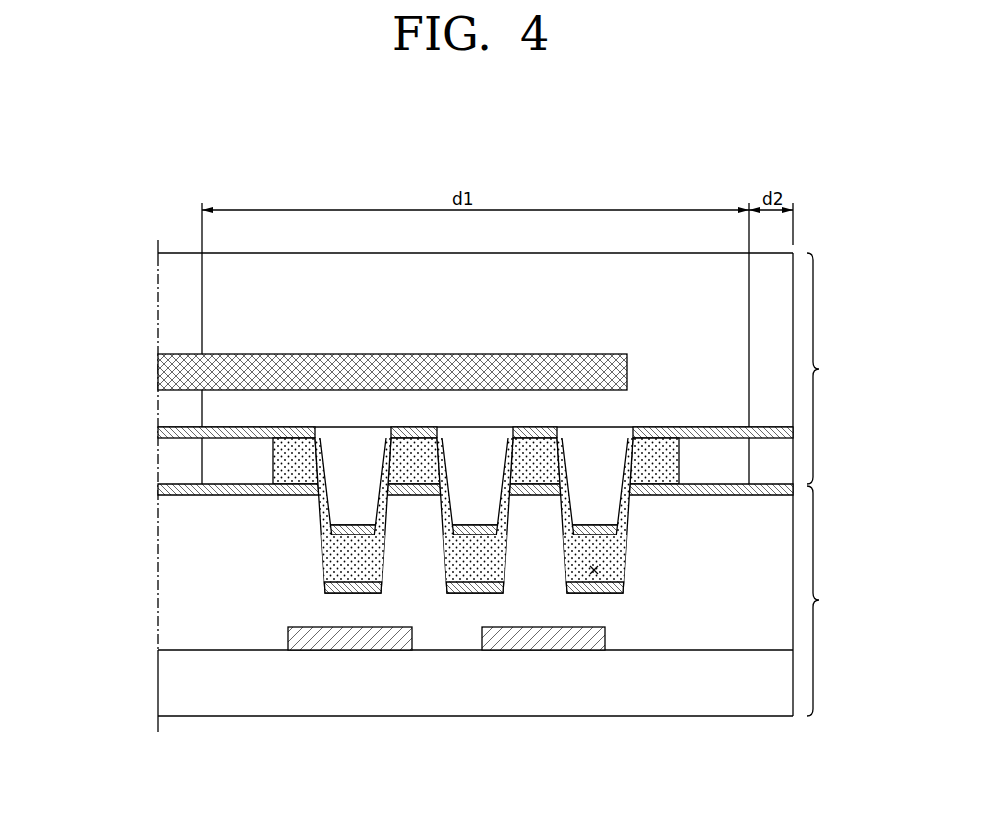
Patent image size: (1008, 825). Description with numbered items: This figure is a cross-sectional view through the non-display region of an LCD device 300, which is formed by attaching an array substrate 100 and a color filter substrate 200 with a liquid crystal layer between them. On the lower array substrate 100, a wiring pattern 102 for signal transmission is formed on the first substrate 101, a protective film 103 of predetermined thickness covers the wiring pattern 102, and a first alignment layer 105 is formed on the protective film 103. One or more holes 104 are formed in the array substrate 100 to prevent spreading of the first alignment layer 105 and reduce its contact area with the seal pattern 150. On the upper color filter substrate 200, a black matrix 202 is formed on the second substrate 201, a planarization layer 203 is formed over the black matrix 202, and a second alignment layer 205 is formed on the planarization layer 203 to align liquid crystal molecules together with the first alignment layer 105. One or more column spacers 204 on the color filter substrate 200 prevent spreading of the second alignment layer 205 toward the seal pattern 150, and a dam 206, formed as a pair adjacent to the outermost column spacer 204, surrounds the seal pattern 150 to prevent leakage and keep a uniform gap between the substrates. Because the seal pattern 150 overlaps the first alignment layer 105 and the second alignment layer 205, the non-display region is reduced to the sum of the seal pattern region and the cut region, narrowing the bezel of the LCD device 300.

The LCD device 300 is at (797, 184).
The color filter substrate 200 is at (830, 368).
The array substrate 100 is at (830, 601).
The second substrate 201 is at (165, 303).
The black matrix 202 is at (165, 372).
The planarization layer 203 is at (165, 410).
The second alignment layer 205 is at (165, 433).
The dam 206 is at (213, 465).
The first alignment layer 105 is at (165, 492).
The column spacer 204 is at (340, 508).
The protective film 103 is at (165, 565).
The wiring pattern 102 is at (297, 639).
The first substrate 101 is at (165, 689).
The seal pattern 150 is at (465, 572).
The hole 104 is at (593, 578).